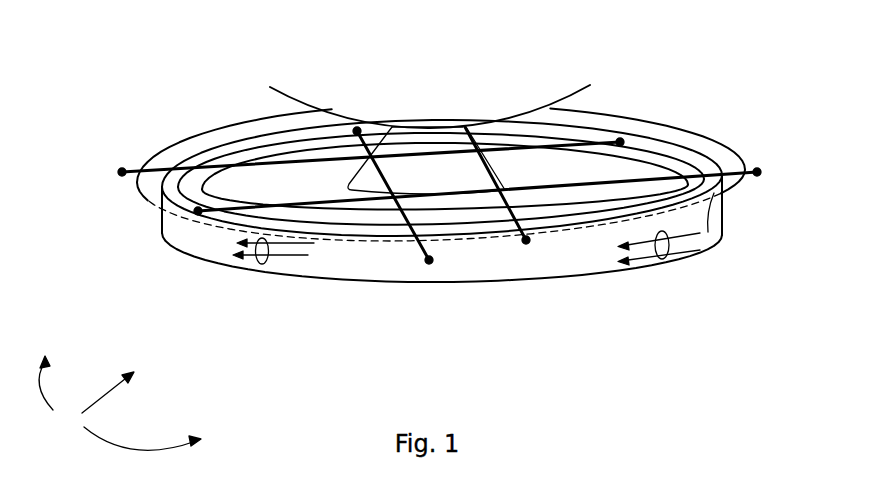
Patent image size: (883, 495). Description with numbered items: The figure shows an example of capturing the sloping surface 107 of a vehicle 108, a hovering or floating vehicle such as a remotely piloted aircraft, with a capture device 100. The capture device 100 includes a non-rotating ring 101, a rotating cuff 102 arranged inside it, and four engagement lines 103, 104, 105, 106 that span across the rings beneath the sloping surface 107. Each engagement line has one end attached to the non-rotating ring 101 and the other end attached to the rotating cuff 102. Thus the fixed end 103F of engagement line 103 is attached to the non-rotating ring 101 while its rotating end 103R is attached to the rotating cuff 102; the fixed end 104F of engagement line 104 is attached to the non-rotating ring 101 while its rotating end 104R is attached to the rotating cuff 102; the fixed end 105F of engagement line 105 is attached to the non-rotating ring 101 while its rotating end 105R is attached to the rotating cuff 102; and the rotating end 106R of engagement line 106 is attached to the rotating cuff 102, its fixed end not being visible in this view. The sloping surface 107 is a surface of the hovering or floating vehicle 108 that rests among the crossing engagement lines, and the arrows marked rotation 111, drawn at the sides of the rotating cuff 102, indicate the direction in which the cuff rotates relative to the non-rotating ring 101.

The capture device 100 is at (120, 403).
The non-rotating ring 101 is at (650, 118).
The rotating cuff 102 is at (216, 150).
The engagement line 103 is at (400, 221).
The rotating end of engagement line 103 103R is at (352, 128).
The fixed end of engagement line 103 103F is at (432, 266).
The engagement line 104 is at (148, 192).
The fixed end of engagement line 104 104F is at (123, 180).
The rotating end of engagement line 104 104R is at (665, 148).
The engagement line 105 is at (742, 163).
The fixed end of engagement line 105 105F is at (760, 178).
The rotating end of engagement line 105 105R is at (198, 217).
The engagement line 106 is at (558, 226).
The rotating end of engagement line 106 106R is at (524, 246).
The sloping surface 107 is at (410, 150).
The vehicle 108 is at (407, 106).
The rotation 111 is at (670, 258).